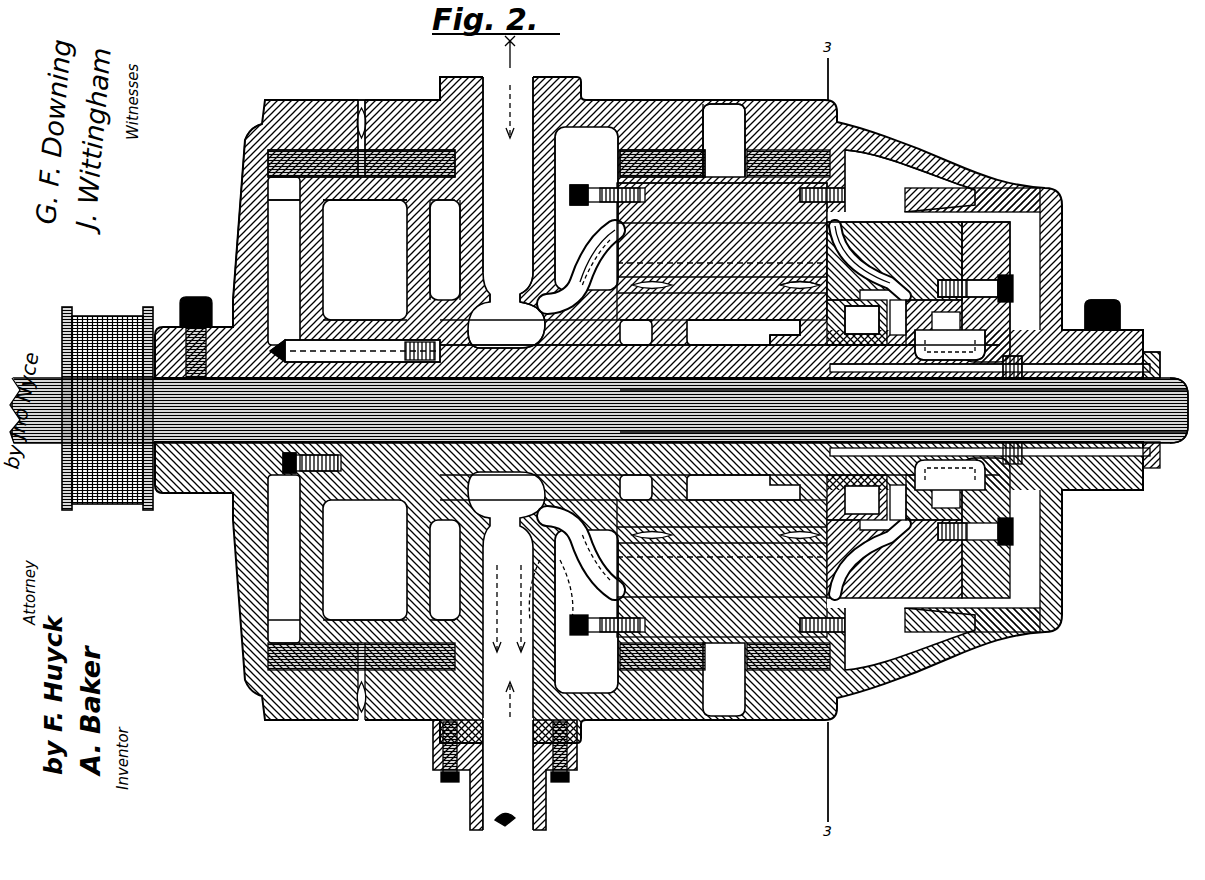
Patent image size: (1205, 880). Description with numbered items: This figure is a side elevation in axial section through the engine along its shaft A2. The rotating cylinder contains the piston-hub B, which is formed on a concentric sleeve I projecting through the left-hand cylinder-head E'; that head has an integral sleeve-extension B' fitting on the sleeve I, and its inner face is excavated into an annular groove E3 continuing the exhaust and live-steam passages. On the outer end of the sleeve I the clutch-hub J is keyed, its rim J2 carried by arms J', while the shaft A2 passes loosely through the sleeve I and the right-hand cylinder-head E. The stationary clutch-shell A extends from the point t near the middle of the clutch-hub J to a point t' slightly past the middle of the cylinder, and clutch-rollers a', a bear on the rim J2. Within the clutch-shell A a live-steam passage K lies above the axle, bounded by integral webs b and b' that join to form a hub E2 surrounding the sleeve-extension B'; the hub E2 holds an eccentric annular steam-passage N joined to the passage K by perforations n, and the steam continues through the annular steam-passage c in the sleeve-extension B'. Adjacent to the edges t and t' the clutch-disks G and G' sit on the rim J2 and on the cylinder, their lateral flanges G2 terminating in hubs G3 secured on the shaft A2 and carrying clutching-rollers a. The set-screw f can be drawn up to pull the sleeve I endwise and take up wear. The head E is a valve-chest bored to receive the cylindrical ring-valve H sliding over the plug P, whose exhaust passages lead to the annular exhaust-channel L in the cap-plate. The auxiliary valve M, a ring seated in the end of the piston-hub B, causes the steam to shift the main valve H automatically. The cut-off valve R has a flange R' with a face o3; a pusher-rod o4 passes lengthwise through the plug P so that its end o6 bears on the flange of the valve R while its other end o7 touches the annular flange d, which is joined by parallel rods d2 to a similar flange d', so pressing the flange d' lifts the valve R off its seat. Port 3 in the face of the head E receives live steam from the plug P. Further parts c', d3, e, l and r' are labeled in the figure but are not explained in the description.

The stationary clutch-shell A is at (545, 413).
The shaft A2 is at (1175, 450).
The piston-hub B is at (743, 414).
The sleeve-extension B' is at (506, 410).
The annular steam-passage c is at (750, 388).
The cylinder block c' is at (722, 251).
The annular flange d is at (990, 353).
The annular flange d' is at (1157, 355).
The parallel rods d2 is at (1125, 345).
The bracket flange d3 is at (201, 495).
The pin e is at (355, 351).
The right-hand cylinder-head E is at (910, 180).
The left-hand cylinder-head E' is at (588, 181).
The hub E2 is at (486, 297).
The annular groove E3 is at (590, 264).
The set-screw f is at (282, 463).
The clutch-disk G is at (752, 424).
The clutch-disk G' is at (352, 413).
The lateral flanges G2 is at (248, 247).
The hubs G3 is at (1110, 328).
The ring-valve H is at (862, 411).
The sleeve I is at (506, 356).
The clutch-hub J is at (365, 410).
The arms J' is at (392, 381).
The rim J2 is at (392, 190).
The live-steam passage K is at (508, 373).
The exhaust channel L is at (1005, 566).
The bolt l is at (1000, 292).
The auxiliary valve M is at (875, 299).
The annular steam-passage N is at (504, 402).
The perforations n is at (530, 320).
The face of flange o3 is at (843, 353).
The pusher-rod o4 is at (922, 350).
The rod end o6 is at (882, 353).
The rod end o7 is at (1010, 360).
The plug P is at (945, 354).
The cut-off valve R is at (765, 406).
The flange R' is at (783, 408).
The vane r' is at (799, 397).
The point t is at (362, 130).
The point t' is at (724, 130).
The clutching-rollers a is at (533, 419).
The clutch-rollers a' is at (554, 397).
The webs b is at (567, 208).
The webs b' is at (529, 611).
The port 3 is at (827, 439).